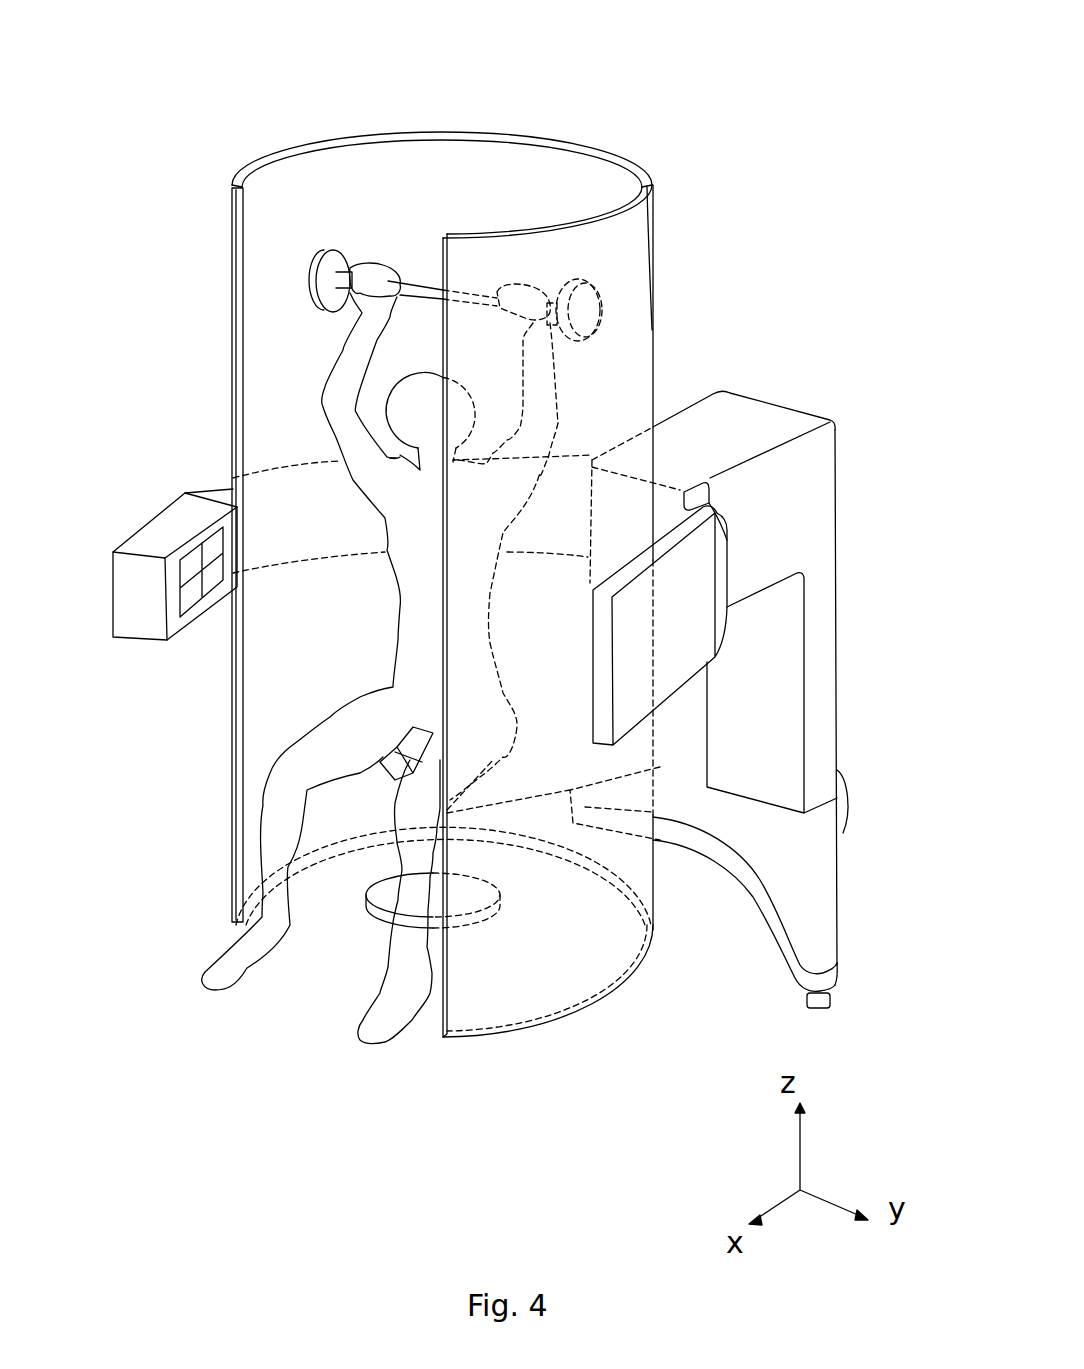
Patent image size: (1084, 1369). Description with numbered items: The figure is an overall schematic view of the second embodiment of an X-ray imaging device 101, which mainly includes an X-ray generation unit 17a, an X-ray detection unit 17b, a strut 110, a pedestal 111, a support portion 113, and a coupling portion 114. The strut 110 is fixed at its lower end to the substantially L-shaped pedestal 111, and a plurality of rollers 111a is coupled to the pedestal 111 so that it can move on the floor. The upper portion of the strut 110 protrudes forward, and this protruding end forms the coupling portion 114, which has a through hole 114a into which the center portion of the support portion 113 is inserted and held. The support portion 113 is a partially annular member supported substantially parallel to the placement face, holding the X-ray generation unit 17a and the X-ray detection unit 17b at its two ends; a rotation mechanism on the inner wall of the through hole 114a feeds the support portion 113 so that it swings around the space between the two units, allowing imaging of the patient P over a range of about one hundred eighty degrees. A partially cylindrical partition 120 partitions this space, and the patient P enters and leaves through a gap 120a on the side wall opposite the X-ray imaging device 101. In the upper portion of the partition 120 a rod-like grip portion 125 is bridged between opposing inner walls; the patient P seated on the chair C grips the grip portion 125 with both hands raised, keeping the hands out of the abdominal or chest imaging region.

The X-ray imaging device 101 is at (773, 132).
The partition 120 is at (625, 282).
The gap 120a is at (232, 186).
The grip portion 125 is at (430, 282).
The support portion 113 is at (232, 478).
The X-ray generation unit 17a is at (167, 643).
The strut 110 is at (785, 668).
The coupling portion 114 is at (623, 513).
The through hole 114a is at (705, 495).
The X-ray detection unit 17b is at (638, 697).
The pedestal 111 is at (813, 865).
The rollers 111a is at (830, 1003).
The patient P is at (225, 958).
The chair C is at (458, 913).